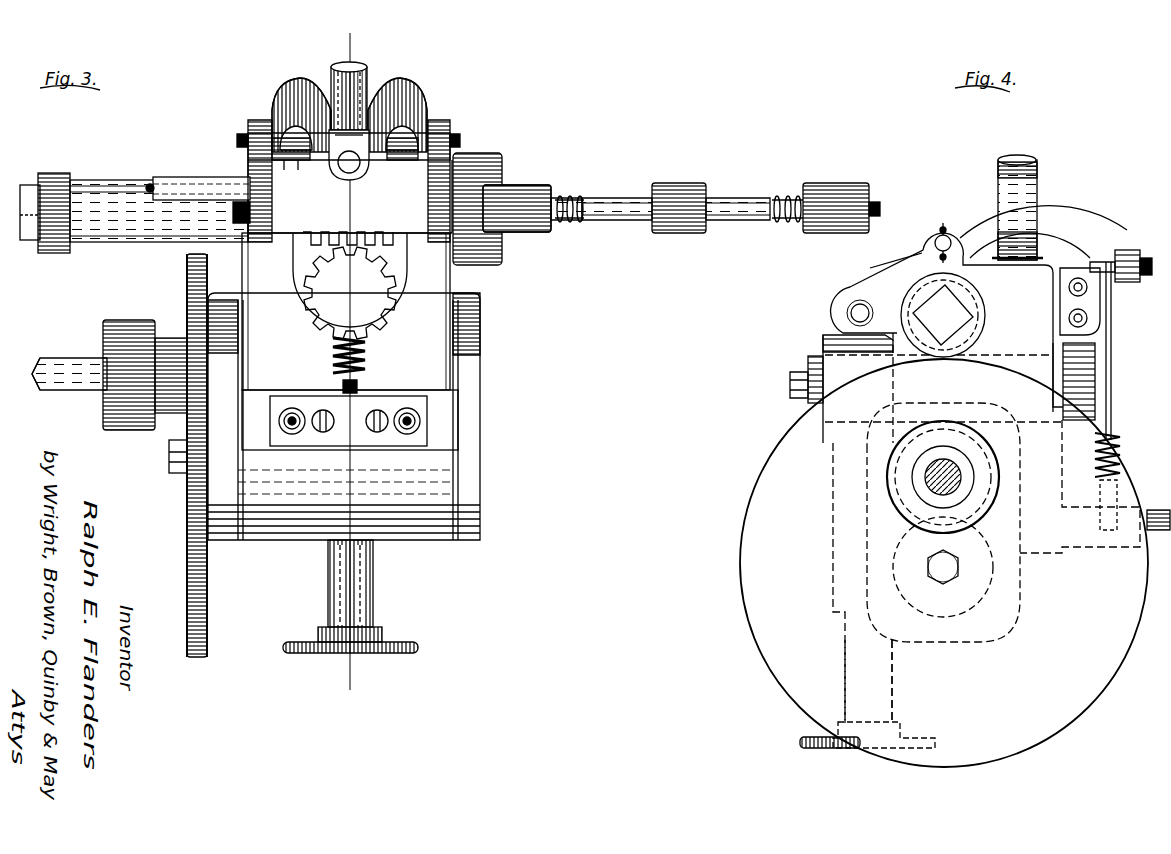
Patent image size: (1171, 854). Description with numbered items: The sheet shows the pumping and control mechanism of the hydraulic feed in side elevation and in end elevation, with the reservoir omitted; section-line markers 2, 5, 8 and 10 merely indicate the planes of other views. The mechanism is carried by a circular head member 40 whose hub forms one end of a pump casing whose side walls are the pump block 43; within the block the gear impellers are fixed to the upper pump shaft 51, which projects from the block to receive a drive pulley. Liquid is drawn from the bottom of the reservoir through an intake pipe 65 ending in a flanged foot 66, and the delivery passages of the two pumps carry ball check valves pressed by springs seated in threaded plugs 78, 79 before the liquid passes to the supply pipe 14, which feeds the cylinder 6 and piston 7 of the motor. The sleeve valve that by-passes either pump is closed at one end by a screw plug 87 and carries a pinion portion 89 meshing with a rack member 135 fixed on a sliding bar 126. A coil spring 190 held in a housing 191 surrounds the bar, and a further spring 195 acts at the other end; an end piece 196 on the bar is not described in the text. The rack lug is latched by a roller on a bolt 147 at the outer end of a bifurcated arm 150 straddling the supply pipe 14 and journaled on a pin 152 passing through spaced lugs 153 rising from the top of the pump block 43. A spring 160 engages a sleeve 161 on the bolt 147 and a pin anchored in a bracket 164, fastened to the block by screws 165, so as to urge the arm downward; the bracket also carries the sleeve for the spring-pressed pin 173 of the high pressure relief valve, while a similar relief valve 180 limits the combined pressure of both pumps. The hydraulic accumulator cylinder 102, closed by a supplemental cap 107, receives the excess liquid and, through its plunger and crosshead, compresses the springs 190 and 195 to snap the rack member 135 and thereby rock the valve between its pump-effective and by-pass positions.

In FIG. 4, the section line / tube 2 is at (1017, 128).
In FIG. 4, the section line 5 is at (1145, 315).
In FIG. 4, the cylinder 6 is at (1077, 467).
In FIG. 4, the piston 7 is at (1150, 390).
In FIG. 4, the section line 8 is at (1160, 523).
In FIG. 3, the section line 10 is at (350, 33).
In FIG. 3, the supply pipe 14 is at (328, 68).
In FIG. 3, the circular head member 40 is at (188, 512).
In FIG. 4, the circular head member 40 is at (780, 660).
In FIG. 3, the pump block 43 is at (432, 365).
In FIG. 4, the pump block 43 is at (938, 338).
In FIG. 3, the upper pump shaft 51 is at (72, 358).
In FIG. 4, the upper pump shaft 51 is at (935, 470).
In FIG. 3, the intake pipe 65 is at (326, 586).
In FIG. 4, the intake pipe 65 is at (895, 690).
In FIG. 3, the flanged foot 66 is at (393, 640).
In FIG. 4, the flanged foot 66 is at (800, 742).
In FIG. 3, the threaded plug 78 is at (268, 155).
In FIG. 3, the threaded plug 79 is at (430, 140).
In FIG. 4, the screw plug 87 is at (813, 352).
In FIG. 3, the pinion portion 89 is at (370, 296).
In FIG. 4, the pinion portion 89 is at (1100, 335).
In FIG. 3, the hydraulic accumulator cylinder 102 is at (118, 180).
In FIG. 3, the supplemental cap 107 is at (30, 183).
In FIG. 4, the supplemental cap 107 is at (947, 325).
In FIG. 3, the bar 126 is at (636, 193).
In FIG. 3, the rack member 135 is at (306, 246).
In FIG. 3, the bolt 147 is at (345, 172).
In FIG. 3, the bifurcated arm 150 is at (412, 102).
In FIG. 4, the bifurcated arm 150 is at (1095, 215).
In FIG. 3, the pin 152 is at (248, 128).
In FIG. 4, the pin 152 is at (935, 245).
In FIG. 4, the spaced lugs 153 is at (882, 266).
In FIG. 3, the spring 160 is at (363, 356).
In FIG. 4, the sleeve 161 is at (1110, 250).
In FIG. 3, the bracket 164 is at (280, 405).
In FIG. 3, the screws 165 is at (325, 409).
In FIG. 3, the pin 173 is at (415, 421).
In FIG. 3, the relief valve 180 is at (282, 421).
In FIG. 3, the coil spring 190 is at (588, 195).
In FIG. 3, the housing 191 is at (538, 185).
In FIG. 3, the spring 195 is at (790, 195).
In FIG. 3, the knob 196 is at (850, 188).